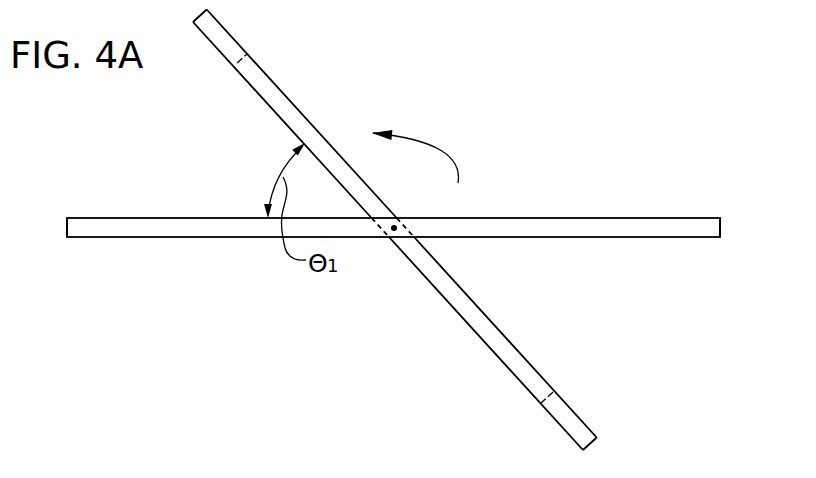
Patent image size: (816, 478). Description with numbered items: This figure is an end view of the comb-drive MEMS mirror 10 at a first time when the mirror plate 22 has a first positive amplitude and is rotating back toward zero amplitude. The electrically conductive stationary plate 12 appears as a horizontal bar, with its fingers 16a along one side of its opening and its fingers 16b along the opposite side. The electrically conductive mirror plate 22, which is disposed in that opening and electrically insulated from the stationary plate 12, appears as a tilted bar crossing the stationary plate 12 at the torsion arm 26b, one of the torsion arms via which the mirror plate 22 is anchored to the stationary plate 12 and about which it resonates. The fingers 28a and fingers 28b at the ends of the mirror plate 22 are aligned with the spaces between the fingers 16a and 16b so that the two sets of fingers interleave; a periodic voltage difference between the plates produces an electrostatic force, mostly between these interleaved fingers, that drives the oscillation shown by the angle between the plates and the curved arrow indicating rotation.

The MEMS mirror 10 is at (463, 108).
The stationary plate 12 is at (445, 218).
The fingers 16a is at (123, 218).
The fingers 16b is at (684, 218).
The mirror plate 22 is at (299, 131).
The torsion arm 26b is at (390, 238).
The fingers 28a is at (236, 43).
The fingers 28b is at (560, 425).